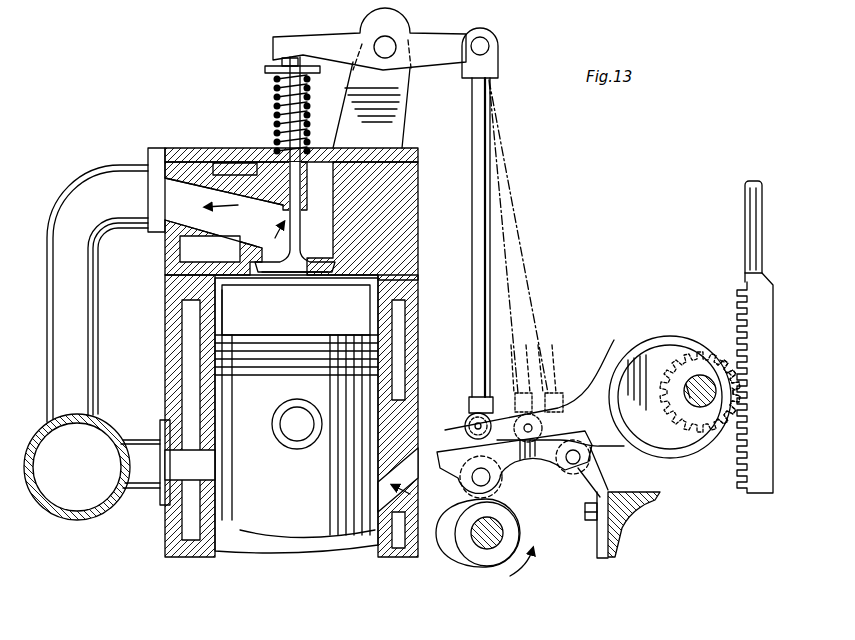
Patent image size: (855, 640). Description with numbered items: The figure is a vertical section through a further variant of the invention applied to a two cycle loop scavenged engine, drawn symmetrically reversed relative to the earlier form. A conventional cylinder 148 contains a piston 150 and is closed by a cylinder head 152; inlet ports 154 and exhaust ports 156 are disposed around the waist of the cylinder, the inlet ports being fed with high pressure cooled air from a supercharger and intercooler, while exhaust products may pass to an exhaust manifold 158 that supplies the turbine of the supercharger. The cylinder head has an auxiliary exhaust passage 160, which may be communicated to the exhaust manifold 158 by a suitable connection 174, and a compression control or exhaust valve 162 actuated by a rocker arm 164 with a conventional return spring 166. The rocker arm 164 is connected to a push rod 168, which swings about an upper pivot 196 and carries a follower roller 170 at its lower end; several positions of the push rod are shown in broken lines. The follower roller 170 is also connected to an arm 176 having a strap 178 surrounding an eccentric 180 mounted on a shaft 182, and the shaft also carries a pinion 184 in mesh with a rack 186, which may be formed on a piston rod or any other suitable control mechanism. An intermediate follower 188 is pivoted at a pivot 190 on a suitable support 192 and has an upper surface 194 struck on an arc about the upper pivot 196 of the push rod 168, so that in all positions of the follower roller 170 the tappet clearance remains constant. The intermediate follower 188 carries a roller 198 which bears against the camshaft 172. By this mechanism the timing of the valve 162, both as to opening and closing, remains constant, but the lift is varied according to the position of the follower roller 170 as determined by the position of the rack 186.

The cylinder 148 is at (383, 352).
The piston 150 is at (320, 345).
The cylinder head 152 is at (236, 156).
The inlet ports 154 is at (414, 502).
The exhaust ports 156 is at (207, 470).
The exhaust manifold 158 is at (86, 520).
The auxiliary exhaust passage 160 is at (176, 192).
The compression control or exhaust valve 162 is at (292, 268).
The rocker arm 164 is at (328, 44).
The return spring 166 is at (273, 88).
The push rod 168 is at (486, 172).
The follower roller 170 is at (468, 406).
The camshaft 172 is at (478, 560).
The connection 174 is at (92, 346).
The arm 176 is at (568, 405).
The strap 178 is at (648, 340).
The eccentric 180 is at (657, 440).
The shaft 182 is at (695, 408).
The pinion 184 is at (718, 360).
The rack 186 is at (740, 478).
The intermediate follower 188 is at (552, 462).
The pivot 190 is at (582, 457).
The support 192 is at (592, 500).
The upper surface 194 is at (466, 426).
The upper pivot 196 is at (492, 44).
The roller 198 is at (498, 481).